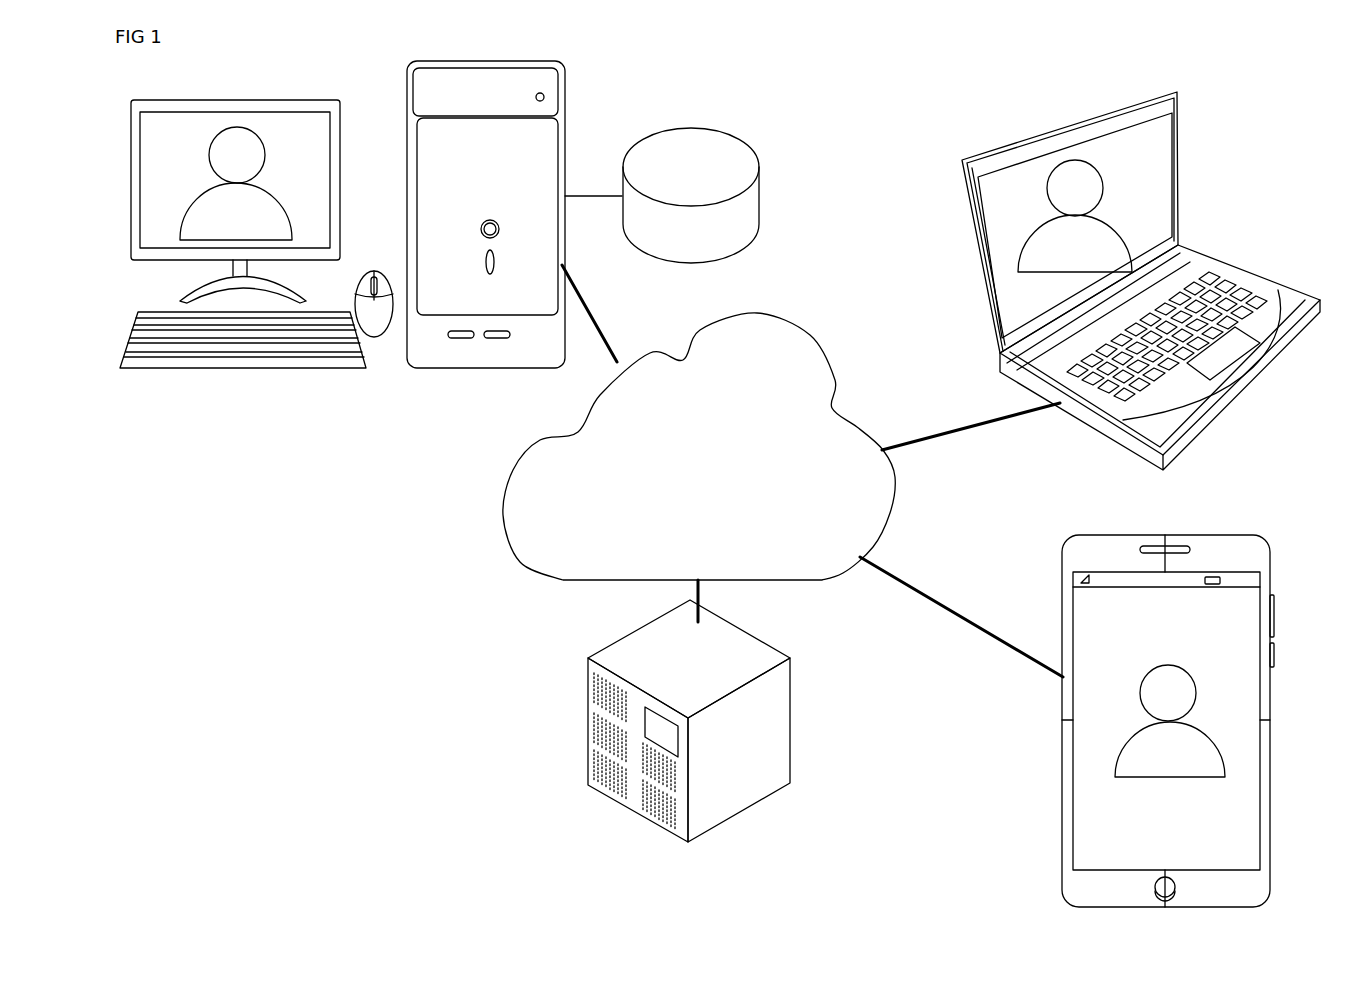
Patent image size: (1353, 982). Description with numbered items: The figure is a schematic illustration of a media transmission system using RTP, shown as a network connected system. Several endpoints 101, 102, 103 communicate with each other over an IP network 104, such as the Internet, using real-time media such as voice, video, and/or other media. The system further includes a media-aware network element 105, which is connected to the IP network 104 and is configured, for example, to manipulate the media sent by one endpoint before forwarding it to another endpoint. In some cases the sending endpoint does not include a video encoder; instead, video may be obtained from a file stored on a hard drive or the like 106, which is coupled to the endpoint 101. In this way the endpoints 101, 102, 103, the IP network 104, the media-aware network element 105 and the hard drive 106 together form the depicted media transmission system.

The endpoint 101 is at (563, 120).
The endpoint 102 is at (1200, 255).
The endpoint 103 is at (1063, 860).
The IP network 104 is at (699, 446).
The media-aware network element 105 is at (588, 750).
The hard drive 106 is at (758, 165).